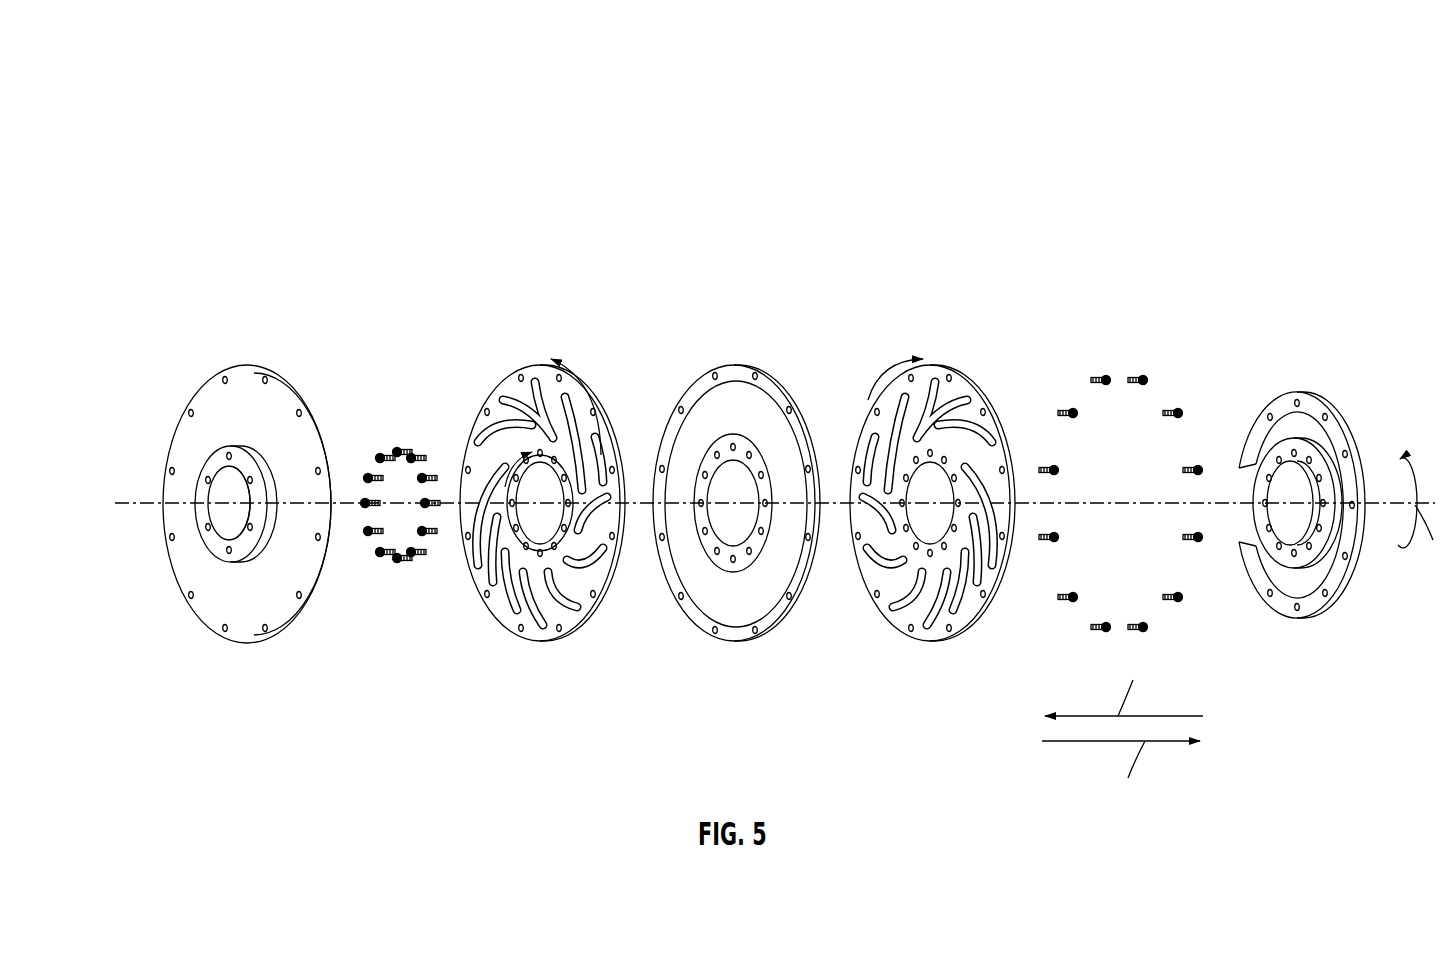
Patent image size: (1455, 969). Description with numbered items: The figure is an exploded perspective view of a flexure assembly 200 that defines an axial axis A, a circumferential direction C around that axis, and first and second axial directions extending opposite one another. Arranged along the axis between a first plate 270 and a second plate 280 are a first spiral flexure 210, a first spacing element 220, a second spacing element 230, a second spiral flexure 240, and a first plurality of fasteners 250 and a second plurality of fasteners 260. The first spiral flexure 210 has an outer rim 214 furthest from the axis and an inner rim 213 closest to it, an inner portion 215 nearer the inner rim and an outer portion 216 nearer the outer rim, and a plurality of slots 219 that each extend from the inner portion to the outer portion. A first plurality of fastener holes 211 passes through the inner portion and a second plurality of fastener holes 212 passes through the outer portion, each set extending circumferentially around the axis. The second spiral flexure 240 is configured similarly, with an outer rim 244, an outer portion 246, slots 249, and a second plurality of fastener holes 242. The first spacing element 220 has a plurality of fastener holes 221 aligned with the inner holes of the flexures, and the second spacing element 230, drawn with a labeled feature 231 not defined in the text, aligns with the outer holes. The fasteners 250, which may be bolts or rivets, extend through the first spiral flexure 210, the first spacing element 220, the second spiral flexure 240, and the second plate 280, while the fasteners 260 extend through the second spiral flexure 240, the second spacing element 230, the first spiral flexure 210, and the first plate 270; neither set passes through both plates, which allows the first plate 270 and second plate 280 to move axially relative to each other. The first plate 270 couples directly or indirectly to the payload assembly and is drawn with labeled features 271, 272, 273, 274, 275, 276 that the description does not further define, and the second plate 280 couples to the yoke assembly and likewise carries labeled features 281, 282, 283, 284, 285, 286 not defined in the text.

The flexure assembly 200 is at (256, 193).
The first spiral flexure 210 is at (535, 336).
The first plurality of fastener holes 211 is at (556, 533).
The second plurality of fastener holes 212 is at (546, 633).
The inner rim 213 is at (542, 465).
The outer rim 214 is at (496, 617).
The inner portion 215 is at (569, 490).
The outer portion 216 is at (483, 579).
The slots 219 is at (476, 431).
The first spacing element 220 is at (754, 436).
The fastener holes 221 is at (756, 534).
The second spacing element 230 is at (718, 328).
The outer edge 231 is at (677, 411).
The second spiral flexure 240 is at (935, 331).
The second plurality of fastener holes 242 is at (943, 631).
The outer rim 244 is at (890, 615).
The outer portion 246 is at (871, 579).
The slots 249 is at (858, 447).
The first plurality of fasteners 250 is at (398, 424).
The second plurality of fasteners 260 is at (1113, 355).
The first plate 270 is at (238, 336).
The hub 271 is at (198, 477).
The outer wall 272 is at (176, 408).
The bore 273 is at (222, 503).
The rim 274 is at (318, 575).
The flange 275 is at (198, 546).
The face 276 is at (188, 590).
The second plate 280 is at (1285, 343).
The hub 281 is at (1263, 485).
The rim 282 is at (1253, 419).
The bore 283 is at (1267, 521).
The outer wall 284 is at (1358, 555).
The flange 285 is at (1263, 563).
The arm 286 is at (1250, 608).